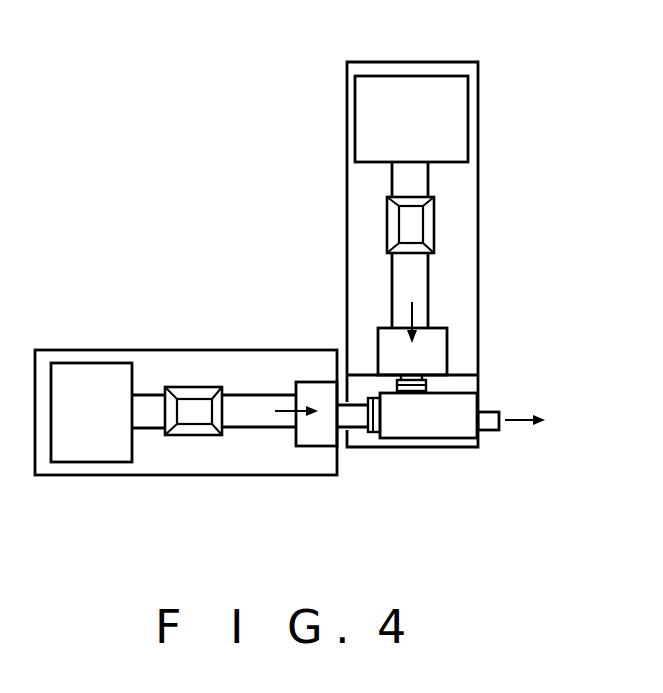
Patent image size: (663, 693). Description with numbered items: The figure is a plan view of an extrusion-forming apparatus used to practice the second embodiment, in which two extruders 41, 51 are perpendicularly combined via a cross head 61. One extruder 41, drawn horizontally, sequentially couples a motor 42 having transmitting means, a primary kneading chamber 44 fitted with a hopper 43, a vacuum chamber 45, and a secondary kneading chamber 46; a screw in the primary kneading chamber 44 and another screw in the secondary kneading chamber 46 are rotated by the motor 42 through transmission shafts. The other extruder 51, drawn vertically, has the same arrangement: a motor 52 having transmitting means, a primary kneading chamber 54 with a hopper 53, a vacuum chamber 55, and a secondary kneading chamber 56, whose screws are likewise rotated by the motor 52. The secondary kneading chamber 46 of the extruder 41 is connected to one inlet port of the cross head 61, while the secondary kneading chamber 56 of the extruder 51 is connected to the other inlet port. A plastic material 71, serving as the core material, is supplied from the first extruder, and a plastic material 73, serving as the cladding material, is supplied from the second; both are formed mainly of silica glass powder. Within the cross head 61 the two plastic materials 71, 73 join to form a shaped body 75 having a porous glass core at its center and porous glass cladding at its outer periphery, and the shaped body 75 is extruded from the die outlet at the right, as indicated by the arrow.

The extruder 41 is at (172, 348).
The motor 42 is at (105, 455).
The hopper 43 is at (197, 395).
The primary kneading chamber 44 is at (262, 402).
The vacuum chamber 45 is at (300, 428).
The secondary kneading chamber 46 is at (357, 420).
The extruder 51 is at (480, 270).
The motor 52 is at (457, 112).
The hopper 53 is at (428, 228).
The primary kneading chamber 54 is at (422, 308).
The vacuum chamber 55 is at (433, 342).
The secondary kneading chamber 56 is at (415, 382).
The cross head 61 is at (443, 425).
The plastic material 71 is at (195, 415).
The plastic material 73 is at (399, 225).
The shaped body 75 is at (492, 436).